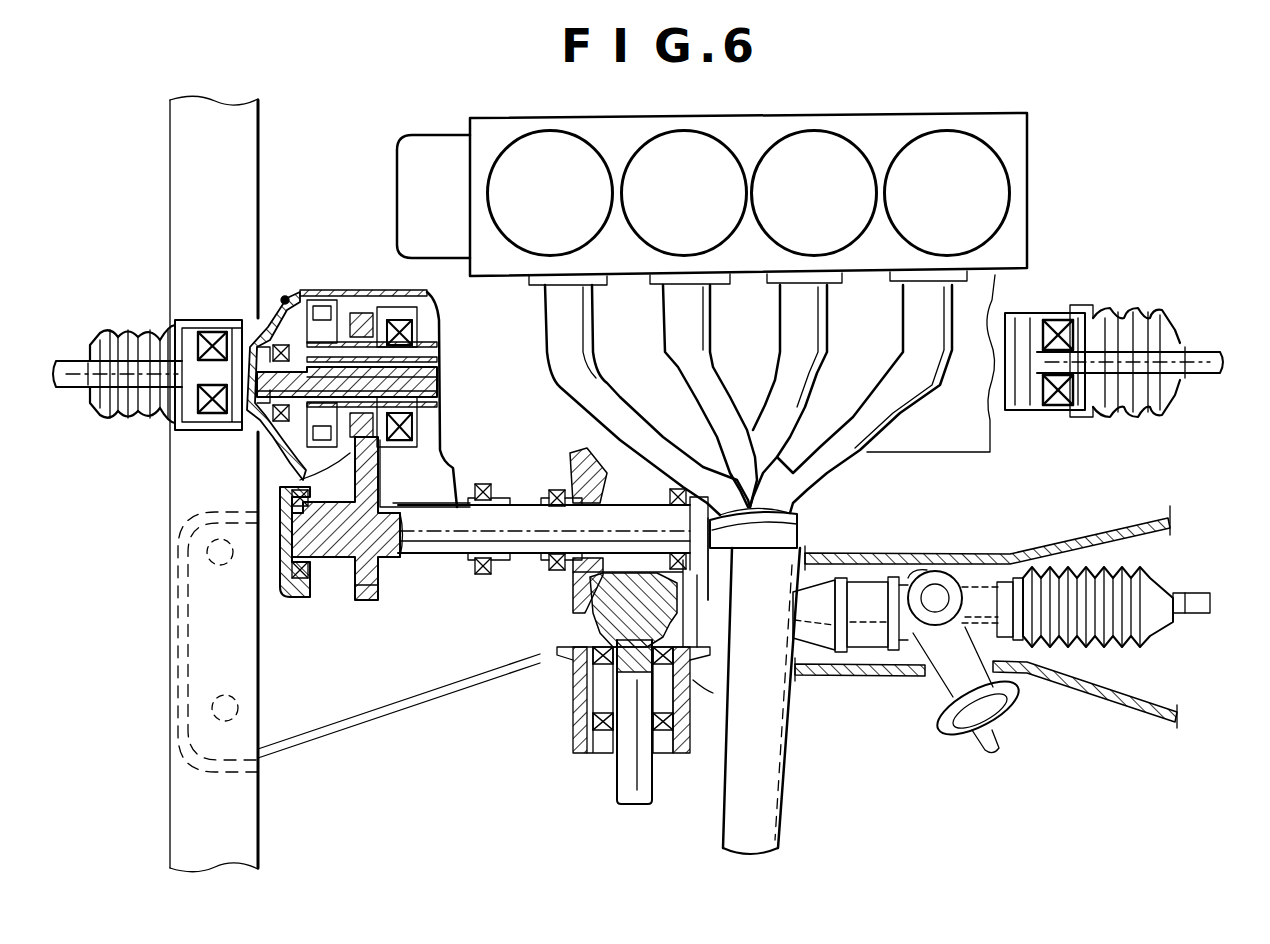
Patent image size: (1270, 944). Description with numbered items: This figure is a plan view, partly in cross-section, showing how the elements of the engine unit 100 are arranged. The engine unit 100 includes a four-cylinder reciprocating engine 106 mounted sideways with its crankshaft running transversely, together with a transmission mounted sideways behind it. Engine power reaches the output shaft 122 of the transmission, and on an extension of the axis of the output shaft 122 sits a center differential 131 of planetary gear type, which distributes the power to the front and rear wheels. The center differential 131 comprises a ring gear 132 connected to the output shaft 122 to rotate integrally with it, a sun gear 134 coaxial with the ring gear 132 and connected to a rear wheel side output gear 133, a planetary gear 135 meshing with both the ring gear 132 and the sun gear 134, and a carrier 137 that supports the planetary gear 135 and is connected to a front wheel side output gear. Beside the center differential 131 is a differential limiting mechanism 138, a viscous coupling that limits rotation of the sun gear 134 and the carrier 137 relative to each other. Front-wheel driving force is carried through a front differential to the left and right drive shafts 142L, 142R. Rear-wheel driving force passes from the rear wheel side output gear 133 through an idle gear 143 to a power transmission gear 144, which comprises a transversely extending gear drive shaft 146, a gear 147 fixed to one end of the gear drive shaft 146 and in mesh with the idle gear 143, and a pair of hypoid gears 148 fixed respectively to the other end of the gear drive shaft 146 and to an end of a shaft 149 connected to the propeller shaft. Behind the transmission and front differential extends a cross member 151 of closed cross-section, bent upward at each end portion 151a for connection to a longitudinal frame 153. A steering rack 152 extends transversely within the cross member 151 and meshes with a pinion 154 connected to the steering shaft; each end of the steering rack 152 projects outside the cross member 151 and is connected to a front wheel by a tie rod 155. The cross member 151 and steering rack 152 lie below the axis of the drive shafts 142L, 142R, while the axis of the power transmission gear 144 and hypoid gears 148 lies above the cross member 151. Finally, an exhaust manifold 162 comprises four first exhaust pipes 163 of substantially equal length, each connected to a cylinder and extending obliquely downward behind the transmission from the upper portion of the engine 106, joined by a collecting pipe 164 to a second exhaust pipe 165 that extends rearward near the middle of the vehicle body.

The engine unit 100 is at (1133, 72).
The four-cylinder reciprocating engine 106 is at (938, 76).
The output shaft 122 is at (430, 384).
The center differential 131 is at (283, 298).
The ring gear 132 is at (345, 290).
The rear wheel side output gear 133 is at (380, 455).
The sun gear 134 is at (340, 310).
The planetary gear 135 is at (320, 290).
The carrier 137 is at (270, 453).
The differential limiting mechanism 138 is at (405, 327).
The left drive shaft 142L is at (150, 372).
The right drive shaft 142R is at (1127, 362).
The idle gear 143 is at (290, 485).
The power transmission gear 144 is at (450, 576).
The gear drive shaft 146 is at (520, 535).
The gear 147 is at (368, 600).
The hypoid gears 148 is at (570, 447).
The shaft 149 is at (633, 773).
The cross member 151 is at (828, 678).
The end portion 151a is at (303, 720).
The steering rack 152 is at (870, 620).
The frame member 153 is at (260, 812).
The pinion 154 is at (950, 645).
The tie rod 155 is at (1193, 616).
The exhaust manifold 162 is at (820, 492).
The first exhaust pipes 163 is at (548, 373).
The collecting pipe 164 is at (803, 520).
The second exhaust pipe 165 is at (778, 792).